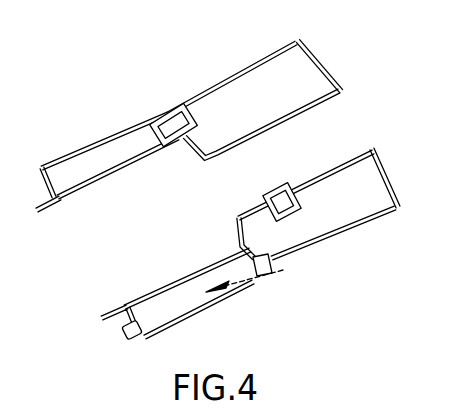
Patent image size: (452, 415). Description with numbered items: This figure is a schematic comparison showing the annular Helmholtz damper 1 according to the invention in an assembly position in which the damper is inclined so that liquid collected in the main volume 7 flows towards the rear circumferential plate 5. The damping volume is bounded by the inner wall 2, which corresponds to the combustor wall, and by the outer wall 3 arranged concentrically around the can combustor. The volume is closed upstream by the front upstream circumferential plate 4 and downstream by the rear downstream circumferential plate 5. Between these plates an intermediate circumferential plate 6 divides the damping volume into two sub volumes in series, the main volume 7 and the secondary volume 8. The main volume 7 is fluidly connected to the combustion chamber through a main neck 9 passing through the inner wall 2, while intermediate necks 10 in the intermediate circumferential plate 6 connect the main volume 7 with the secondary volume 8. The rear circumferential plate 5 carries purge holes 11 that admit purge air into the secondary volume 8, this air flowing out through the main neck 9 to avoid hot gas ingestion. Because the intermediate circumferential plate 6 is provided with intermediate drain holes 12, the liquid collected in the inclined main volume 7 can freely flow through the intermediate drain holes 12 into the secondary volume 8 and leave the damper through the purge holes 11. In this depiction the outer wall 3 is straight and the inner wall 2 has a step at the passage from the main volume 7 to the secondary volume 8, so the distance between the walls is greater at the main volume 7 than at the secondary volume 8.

The annular Helmholtz damper 1 is at (384, 93).
The inner wall 2 is at (237, 148).
The outer wall 3 is at (223, 79).
The front upstream circumferential plate 4 is at (326, 63).
The rear downstream circumferential plate 5 is at (40, 171).
The intermediate circumferential plate 6 is at (238, 237).
The main volume 7 is at (261, 113).
The secondary volume 8 is at (118, 138).
The main neck 9 is at (283, 182).
The intermediate neck 10 is at (192, 104).
The purge hole 11 is at (125, 336).
The intermediate drain hole 12 is at (271, 276).